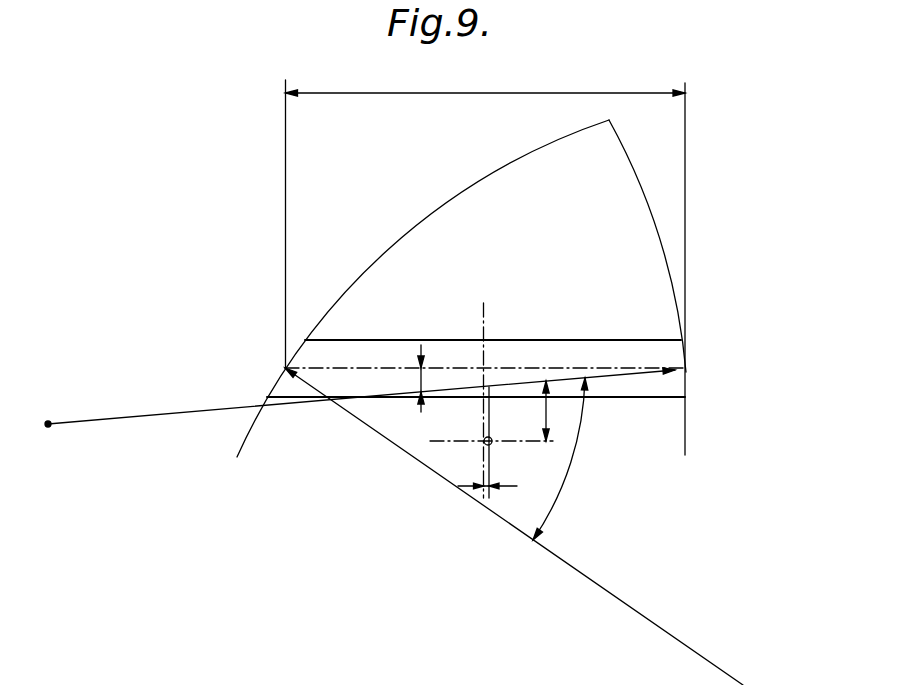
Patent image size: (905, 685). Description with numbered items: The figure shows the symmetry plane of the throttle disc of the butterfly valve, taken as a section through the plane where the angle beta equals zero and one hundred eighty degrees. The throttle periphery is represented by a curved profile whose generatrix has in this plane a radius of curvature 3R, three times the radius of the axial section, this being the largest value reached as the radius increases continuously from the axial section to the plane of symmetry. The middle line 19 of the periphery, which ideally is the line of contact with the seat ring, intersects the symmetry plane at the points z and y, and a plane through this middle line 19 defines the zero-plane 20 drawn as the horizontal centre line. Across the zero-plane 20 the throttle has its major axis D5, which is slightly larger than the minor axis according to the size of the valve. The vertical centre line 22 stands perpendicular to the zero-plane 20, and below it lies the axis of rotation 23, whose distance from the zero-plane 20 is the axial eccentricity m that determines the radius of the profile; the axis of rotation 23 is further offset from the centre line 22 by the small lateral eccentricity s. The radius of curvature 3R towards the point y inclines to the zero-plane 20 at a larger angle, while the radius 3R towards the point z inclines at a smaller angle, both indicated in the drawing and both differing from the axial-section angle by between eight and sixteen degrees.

The middle line 19 is at (476, 341).
The zero-plane 20 is at (556, 369).
The centre line 22 is at (483, 317).
The axis of rotation 23 is at (481, 445).
The radius of curvature 3R is at (178, 412).
The point y is at (284, 368).
The point z is at (685, 368).
The major axis D5 is at (486, 82).
The axial eccentricity m is at (554, 411).
The lateral eccentricity s is at (487, 478).